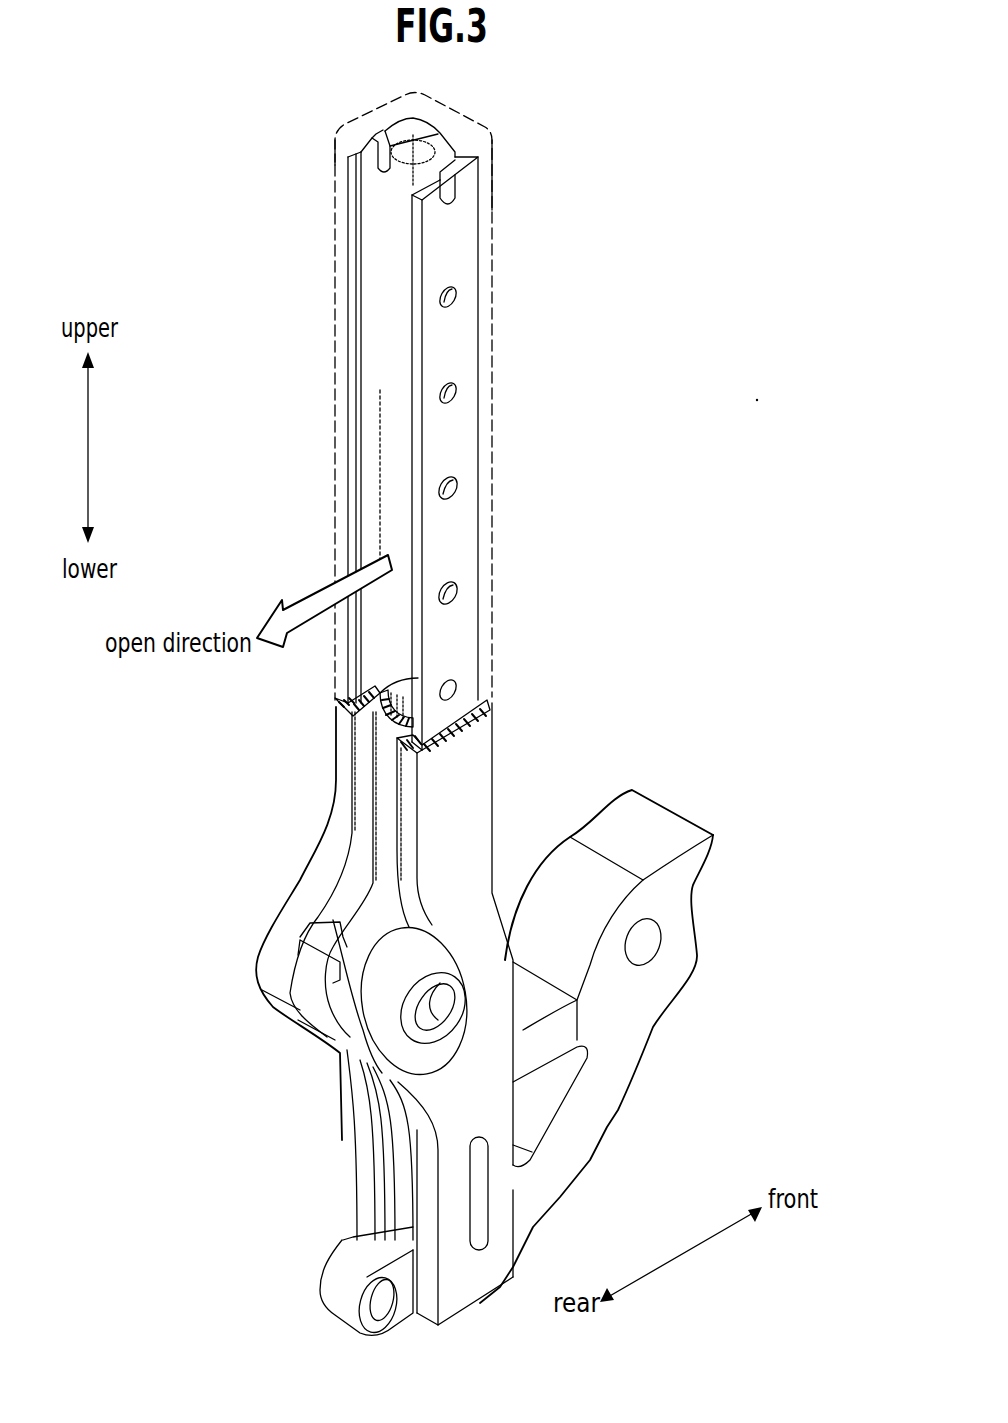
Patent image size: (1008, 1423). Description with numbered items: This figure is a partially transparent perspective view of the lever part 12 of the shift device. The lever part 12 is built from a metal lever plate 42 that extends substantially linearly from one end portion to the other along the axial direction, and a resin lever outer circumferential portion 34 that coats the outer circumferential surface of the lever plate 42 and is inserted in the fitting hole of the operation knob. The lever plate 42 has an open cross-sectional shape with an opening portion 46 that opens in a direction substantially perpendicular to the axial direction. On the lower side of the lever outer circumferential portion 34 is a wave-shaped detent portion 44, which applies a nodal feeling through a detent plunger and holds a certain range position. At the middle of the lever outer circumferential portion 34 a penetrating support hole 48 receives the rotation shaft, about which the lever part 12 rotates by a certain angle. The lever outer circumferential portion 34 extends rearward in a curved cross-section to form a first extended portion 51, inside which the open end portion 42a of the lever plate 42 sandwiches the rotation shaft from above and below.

The lever part 12 is at (303, 755).
The lever outer circumferential portion 34 is at (492, 237).
The lever plate 42 is at (450, 350).
The open end portion 42a is at (417, 285).
The detent portion 44 is at (618, 1116).
The opening portion 46 is at (380, 390).
The support hole 48 is at (445, 955).
The first extended portion 51 is at (340, 1018).